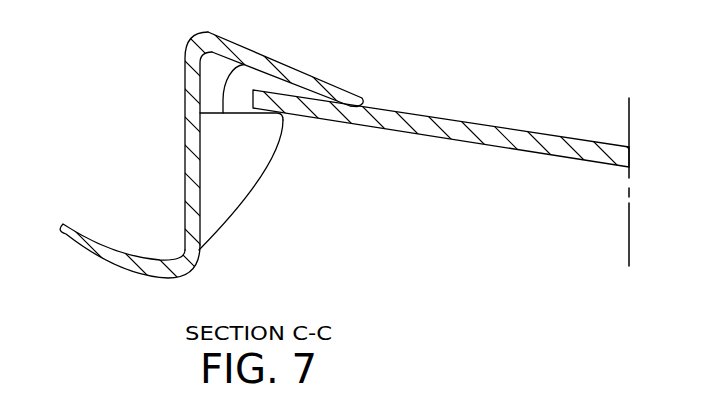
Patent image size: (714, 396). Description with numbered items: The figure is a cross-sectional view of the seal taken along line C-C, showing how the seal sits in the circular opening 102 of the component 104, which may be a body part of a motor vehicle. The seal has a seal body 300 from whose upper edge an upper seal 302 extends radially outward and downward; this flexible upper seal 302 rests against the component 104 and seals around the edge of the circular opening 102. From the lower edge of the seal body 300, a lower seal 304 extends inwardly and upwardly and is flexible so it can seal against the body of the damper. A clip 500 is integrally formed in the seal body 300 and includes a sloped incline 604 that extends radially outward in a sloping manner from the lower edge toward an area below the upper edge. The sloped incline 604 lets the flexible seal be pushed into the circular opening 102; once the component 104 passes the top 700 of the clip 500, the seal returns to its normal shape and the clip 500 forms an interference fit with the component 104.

The circular opening 102 is at (129, 68).
The component 104 is at (441, 119).
The seal body 300 is at (184, 140).
The upper seal 302 is at (329, 77).
The lower seal 304 is at (119, 268).
The clip 500 is at (230, 160).
The sloped incline 604 is at (251, 196).
The top of the clip 700 is at (259, 54).